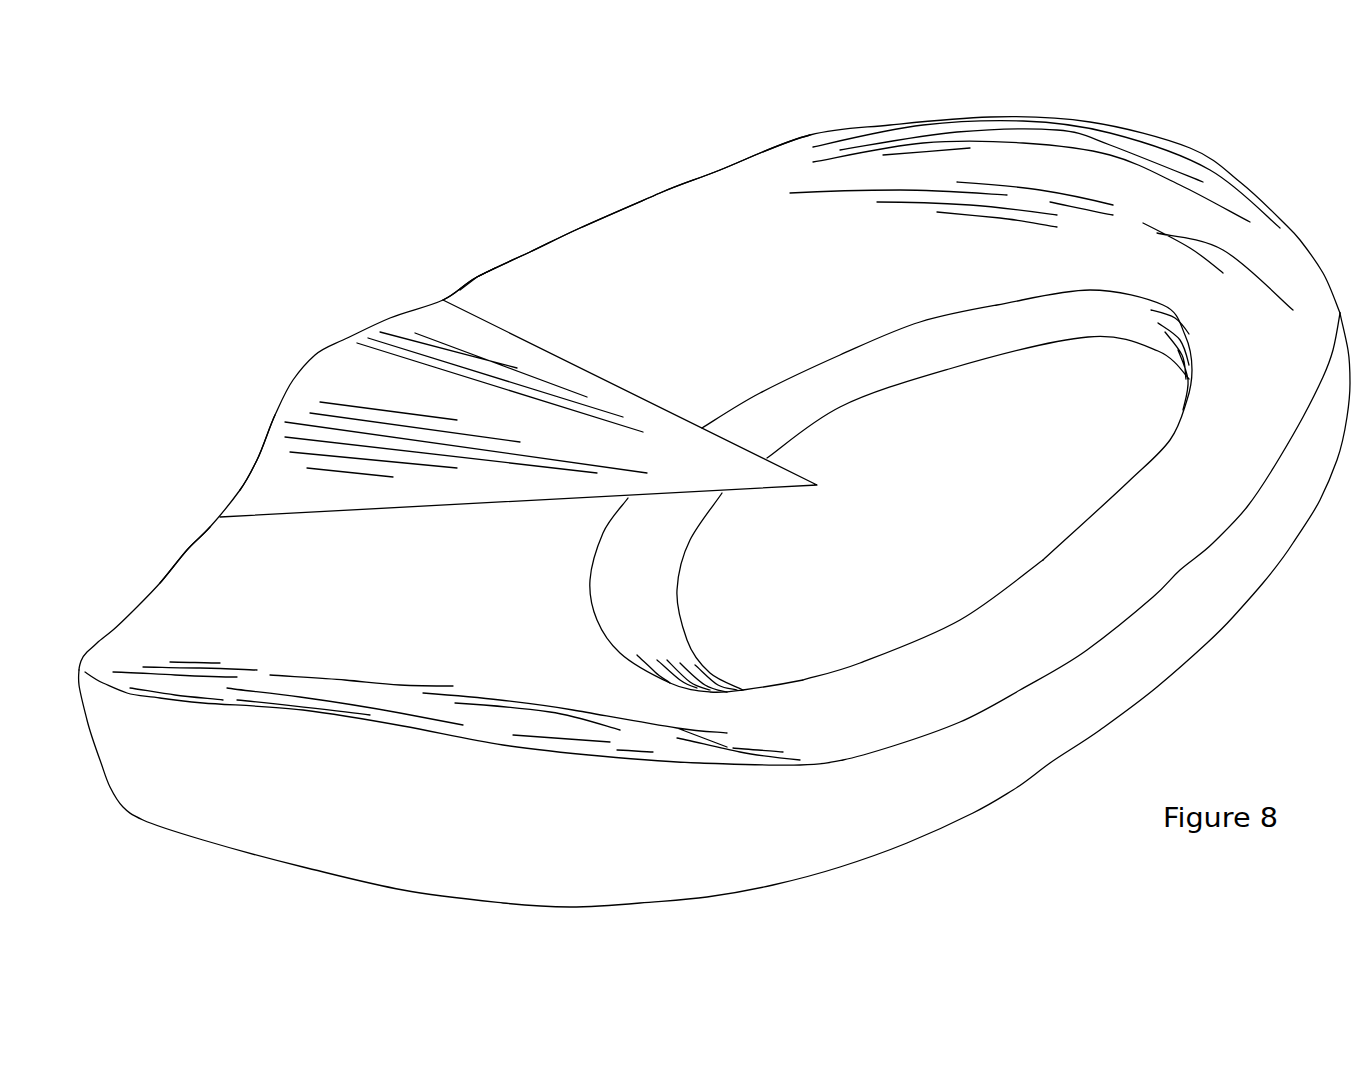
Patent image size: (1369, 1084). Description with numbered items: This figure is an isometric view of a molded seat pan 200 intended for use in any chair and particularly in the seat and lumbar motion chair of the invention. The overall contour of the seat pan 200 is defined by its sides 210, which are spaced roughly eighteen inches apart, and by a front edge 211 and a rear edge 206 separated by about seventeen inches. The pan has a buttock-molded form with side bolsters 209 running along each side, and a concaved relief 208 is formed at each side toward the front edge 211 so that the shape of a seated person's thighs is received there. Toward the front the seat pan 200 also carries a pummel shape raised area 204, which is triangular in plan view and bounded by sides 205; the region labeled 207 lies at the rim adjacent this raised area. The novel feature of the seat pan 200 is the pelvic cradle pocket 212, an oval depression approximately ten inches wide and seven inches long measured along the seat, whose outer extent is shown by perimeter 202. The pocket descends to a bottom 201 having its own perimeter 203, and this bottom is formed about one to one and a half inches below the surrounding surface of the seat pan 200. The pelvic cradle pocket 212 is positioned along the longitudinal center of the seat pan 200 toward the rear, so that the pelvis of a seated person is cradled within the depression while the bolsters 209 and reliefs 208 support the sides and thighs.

The molded seat pan 200 is at (573, 183).
The bottom 201 is at (970, 515).
The perimeter 202 is at (911, 329).
The perimeter 203 is at (947, 369).
The pummel shape raised area 204 is at (350, 367).
The sides 205 is at (660, 407).
The rear edge 206 is at (1157, 588).
The rim corner 207 is at (477, 275).
The concaved relief 208 is at (660, 222).
The side bolsters 209 is at (1130, 161).
The sides 210 is at (1226, 172).
The front edge 211 is at (255, 460).
The pelvic cradle pocket 212 is at (903, 587).